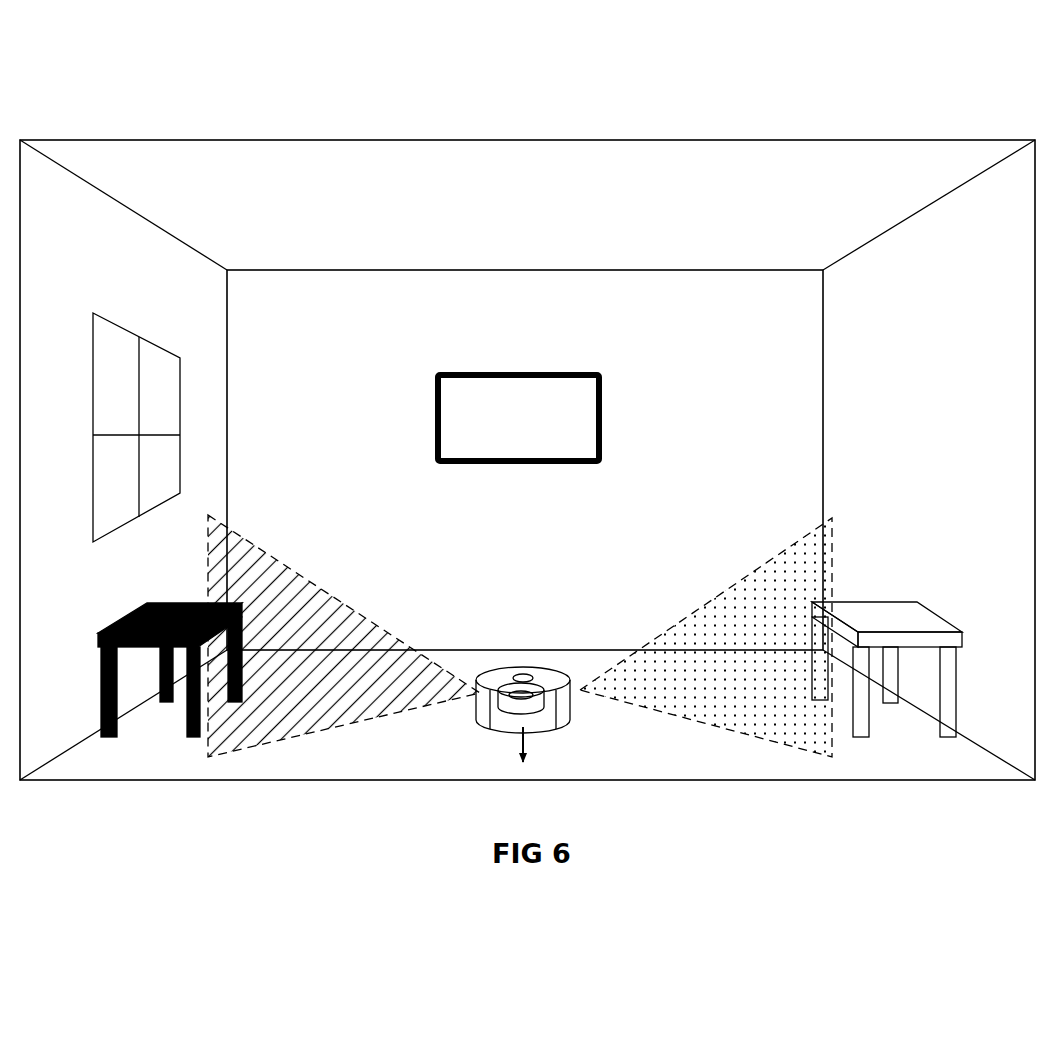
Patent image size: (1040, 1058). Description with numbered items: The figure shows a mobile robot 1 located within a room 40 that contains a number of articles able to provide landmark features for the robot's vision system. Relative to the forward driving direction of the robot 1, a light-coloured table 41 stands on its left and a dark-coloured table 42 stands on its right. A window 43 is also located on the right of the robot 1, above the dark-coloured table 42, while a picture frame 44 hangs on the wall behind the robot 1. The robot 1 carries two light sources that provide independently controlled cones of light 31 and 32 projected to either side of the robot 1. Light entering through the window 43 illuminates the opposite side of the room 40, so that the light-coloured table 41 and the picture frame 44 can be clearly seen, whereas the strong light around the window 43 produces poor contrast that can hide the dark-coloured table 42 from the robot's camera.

The room 40 is at (770, 123).
The robot 1 is at (533, 678).
The cone of light 31 is at (748, 622).
The cone of light 32 is at (305, 625).
The light-coloured table 41 is at (878, 618).
The dark-coloured table 42 is at (98, 633).
The window 43 is at (163, 382).
The picture frame 44 is at (560, 408).